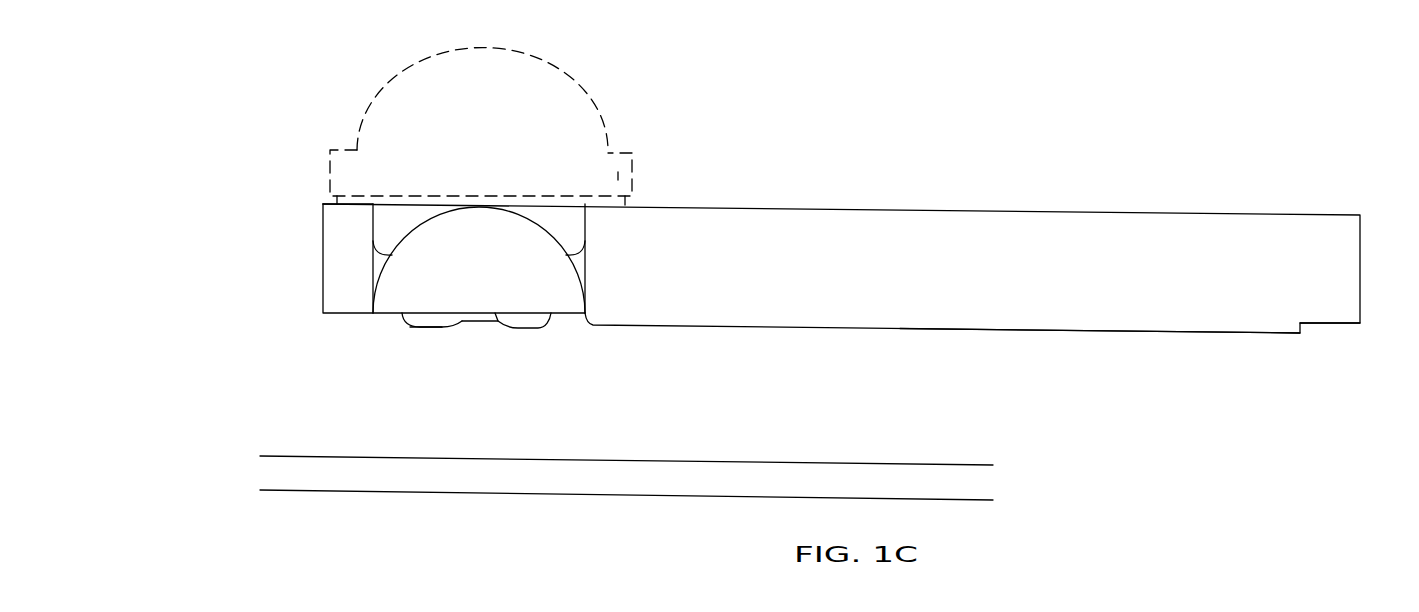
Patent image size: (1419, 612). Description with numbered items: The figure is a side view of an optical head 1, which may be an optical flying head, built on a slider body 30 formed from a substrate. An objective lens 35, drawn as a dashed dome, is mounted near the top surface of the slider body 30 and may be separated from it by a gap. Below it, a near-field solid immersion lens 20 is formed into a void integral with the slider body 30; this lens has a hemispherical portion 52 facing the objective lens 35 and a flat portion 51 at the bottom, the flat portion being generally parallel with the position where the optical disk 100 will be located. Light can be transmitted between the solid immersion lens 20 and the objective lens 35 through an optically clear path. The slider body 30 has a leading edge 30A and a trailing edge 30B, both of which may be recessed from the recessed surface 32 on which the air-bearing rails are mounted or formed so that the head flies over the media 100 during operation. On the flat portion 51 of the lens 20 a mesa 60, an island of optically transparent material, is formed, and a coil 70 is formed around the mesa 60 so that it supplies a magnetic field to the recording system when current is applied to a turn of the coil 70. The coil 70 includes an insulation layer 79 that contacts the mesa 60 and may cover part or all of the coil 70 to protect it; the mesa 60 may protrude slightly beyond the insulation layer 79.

The optical head 1 is at (295, 82).
The solid immersion lens 20 is at (482, 196).
The slider body 30 is at (1285, 208).
The leading edge 30A is at (1330, 326).
The trailing edge 30B is at (331, 322).
The recessed surface 32 is at (1204, 340).
The objective lens 35 is at (594, 92).
The flat portion 51 is at (382, 315).
The hemispherical portion 52 is at (578, 266).
The mesa 60 is at (471, 338).
The coil 70 is at (542, 338).
The insulation layer 79 is at (502, 330).
The optical disk 100 is at (332, 482).